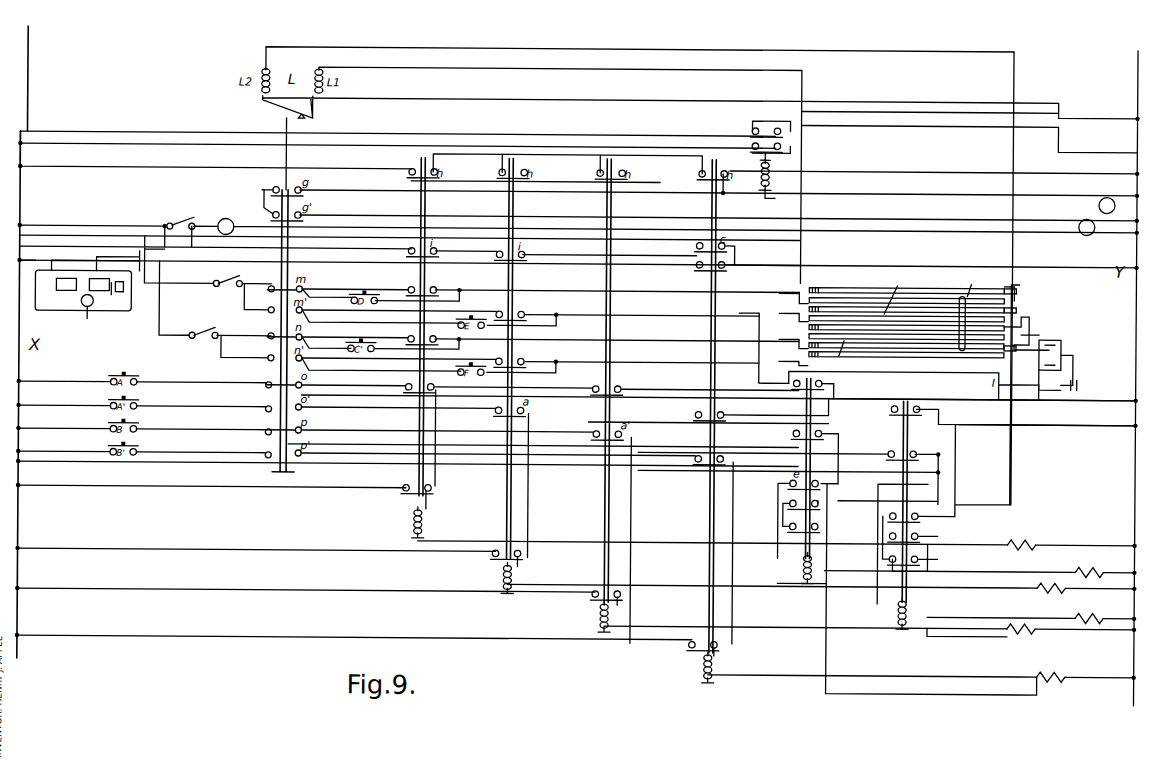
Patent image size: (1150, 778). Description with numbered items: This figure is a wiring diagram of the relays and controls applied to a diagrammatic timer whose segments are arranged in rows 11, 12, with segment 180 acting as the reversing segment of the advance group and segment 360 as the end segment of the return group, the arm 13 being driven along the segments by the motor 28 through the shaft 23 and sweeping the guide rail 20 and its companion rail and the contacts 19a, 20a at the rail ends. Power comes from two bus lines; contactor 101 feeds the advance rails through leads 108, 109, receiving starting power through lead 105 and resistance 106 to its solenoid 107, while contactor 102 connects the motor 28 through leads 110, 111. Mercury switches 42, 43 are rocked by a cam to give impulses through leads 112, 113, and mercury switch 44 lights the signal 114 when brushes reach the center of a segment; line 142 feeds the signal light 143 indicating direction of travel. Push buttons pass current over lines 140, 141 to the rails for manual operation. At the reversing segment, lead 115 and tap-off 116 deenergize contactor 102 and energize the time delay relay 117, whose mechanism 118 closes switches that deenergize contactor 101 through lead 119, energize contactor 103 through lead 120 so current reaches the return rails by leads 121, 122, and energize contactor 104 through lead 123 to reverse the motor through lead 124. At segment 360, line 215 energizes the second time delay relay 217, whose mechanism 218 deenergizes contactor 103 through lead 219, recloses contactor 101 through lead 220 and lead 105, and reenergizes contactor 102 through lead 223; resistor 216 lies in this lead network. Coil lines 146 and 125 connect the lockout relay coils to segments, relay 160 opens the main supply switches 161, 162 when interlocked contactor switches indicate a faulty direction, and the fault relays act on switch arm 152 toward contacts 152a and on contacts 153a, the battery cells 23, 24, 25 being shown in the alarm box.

The line 146 is at (638, 272).
The conductor 125 is at (559, 172).
The main current supply switch 161 is at (774, 130).
The main current supply switch 162 is at (774, 148).
The relay 160 is at (778, 175).
The line 142 is at (216, 172).
The signal light 143 is at (1097, 216).
The mercury switch 44 is at (119, 228).
The light signal 114 is at (677, 229).
The switch arm 152 is at (79, 280).
The contacts 152a is at (66, 306).
The contacts 153a is at (116, 294).
The shaft 23 is at (66, 284).
The cell 24 is at (99, 285).
The cell 25 is at (120, 287).
The mercury switch 43 is at (207, 280).
The line 141 is at (259, 292).
The mercury switch 42 is at (215, 305).
The line 140 is at (247, 340).
The lead 113 is at (370, 284).
The lead 109 is at (587, 290).
The lead 121 is at (530, 312).
The lead 112 is at (370, 333).
The lead 108 is at (587, 338).
The lead 122 is at (530, 359).
The lead 105 is at (371, 382).
The lead 110 is at (720, 260).
The lead 111 is at (617, 385).
The lead 124 is at (708, 410).
The contactor 101 is at (411, 502).
The solenoid 107 is at (522, 570).
The resistance 106 is at (776, 590).
The contactor 103 is at (499, 570).
The lead 219 is at (820, 593).
The contactor 102 is at (599, 604).
The tap-off 116 is at (822, 627).
The contactor 104 is at (703, 656).
The resistor 216 is at (921, 590).
The lead 220 is at (799, 383).
The segment 180 is at (764, 348).
The lead 223 is at (803, 455).
The lead 123 is at (789, 470).
The line 215 is at (860, 512).
The solenoid operated mechanism 218 is at (796, 567).
The time delay relay 217 is at (802, 550).
The lead 120 is at (1000, 408).
The lead 115 is at (946, 495).
The lead 119 is at (954, 455).
The solenoid operated mechanism 118 is at (914, 613).
The time delay relay 117 is at (896, 552).
The segment row 11 is at (892, 319).
The segment row 12 is at (876, 319).
The arm 13 is at (964, 311).
The segment 360 is at (999, 286).
The contact 19a is at (1020, 292).
The contact 20a is at (1020, 307).
The guide rail 20 is at (1026, 340).
The motor 28 is at (1058, 357).